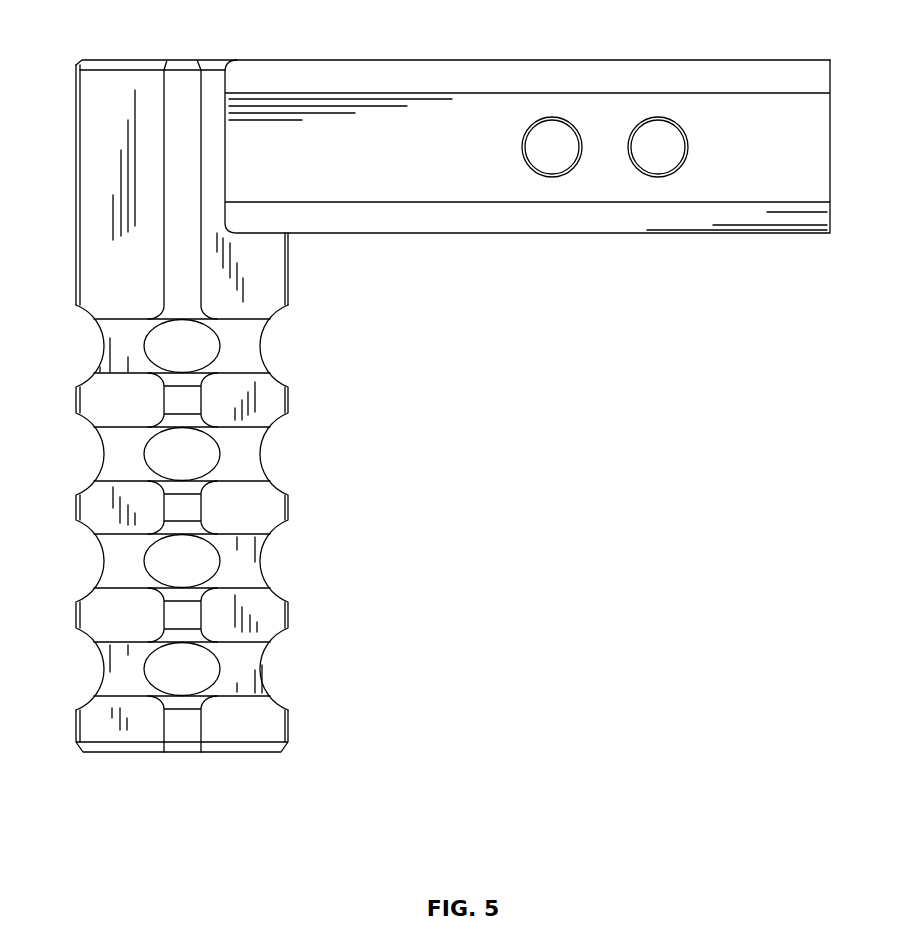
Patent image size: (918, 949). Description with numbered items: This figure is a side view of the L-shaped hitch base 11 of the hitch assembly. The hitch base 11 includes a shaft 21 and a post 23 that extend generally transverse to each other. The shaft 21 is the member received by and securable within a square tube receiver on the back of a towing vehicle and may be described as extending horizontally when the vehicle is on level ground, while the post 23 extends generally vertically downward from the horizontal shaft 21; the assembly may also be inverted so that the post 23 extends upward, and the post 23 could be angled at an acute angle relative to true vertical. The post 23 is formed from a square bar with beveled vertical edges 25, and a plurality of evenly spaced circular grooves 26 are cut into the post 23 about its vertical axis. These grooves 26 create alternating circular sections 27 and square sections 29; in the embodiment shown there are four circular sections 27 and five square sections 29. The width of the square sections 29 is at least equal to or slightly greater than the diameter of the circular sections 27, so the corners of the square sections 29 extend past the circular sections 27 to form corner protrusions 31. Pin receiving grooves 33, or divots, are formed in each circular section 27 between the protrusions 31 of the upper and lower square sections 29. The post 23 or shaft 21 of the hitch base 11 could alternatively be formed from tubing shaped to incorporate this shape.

The hitch base 11 is at (421, 403).
The shaft 21 is at (588, 60).
The post 23 is at (83, 248).
The beveled vertical edges 25 is at (177, 75).
The circular grooves 26 is at (83, 492).
The circular sections 27 is at (100, 675).
The square sections 29 is at (277, 615).
The corner protrusions 31 is at (75, 732).
The pin receiving grooves 33 is at (205, 445).